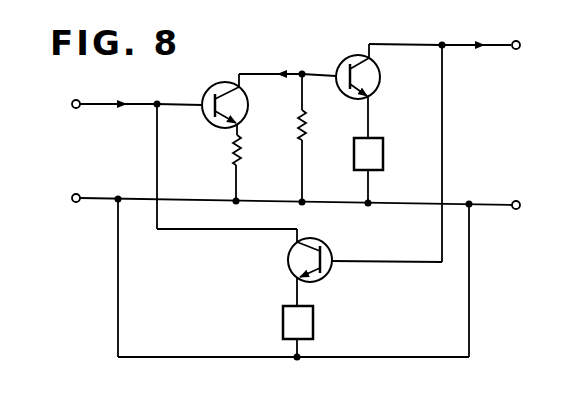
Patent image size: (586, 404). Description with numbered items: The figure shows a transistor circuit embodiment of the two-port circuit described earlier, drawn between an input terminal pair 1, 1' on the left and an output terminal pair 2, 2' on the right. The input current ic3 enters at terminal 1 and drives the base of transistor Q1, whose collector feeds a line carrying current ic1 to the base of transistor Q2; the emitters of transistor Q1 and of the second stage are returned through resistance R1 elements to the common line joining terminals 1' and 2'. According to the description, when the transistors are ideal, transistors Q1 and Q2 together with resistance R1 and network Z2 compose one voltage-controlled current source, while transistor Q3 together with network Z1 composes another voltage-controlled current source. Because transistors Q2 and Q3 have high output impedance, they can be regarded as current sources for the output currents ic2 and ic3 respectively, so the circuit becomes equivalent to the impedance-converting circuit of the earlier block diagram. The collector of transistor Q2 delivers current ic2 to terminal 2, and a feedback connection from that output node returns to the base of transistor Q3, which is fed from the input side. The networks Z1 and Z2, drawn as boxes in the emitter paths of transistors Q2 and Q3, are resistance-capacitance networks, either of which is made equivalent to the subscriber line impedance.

The input terminal 1 is at (68, 105).
The input terminal 1' is at (68, 189).
The output terminal 2 is at (525, 46).
The output terminal 2' is at (526, 195).
The transistor Q1 is at (210, 84).
The transistor Q2 is at (348, 59).
The transistor Q3 is at (288, 260).
The resistance R1 is at (296, 124).
The network Z1 is at (368, 154).
The network Z2 is at (298, 322).
The current ic1 is at (272, 64).
The output current ic2 is at (470, 33).
The output current ic3 is at (112, 94).